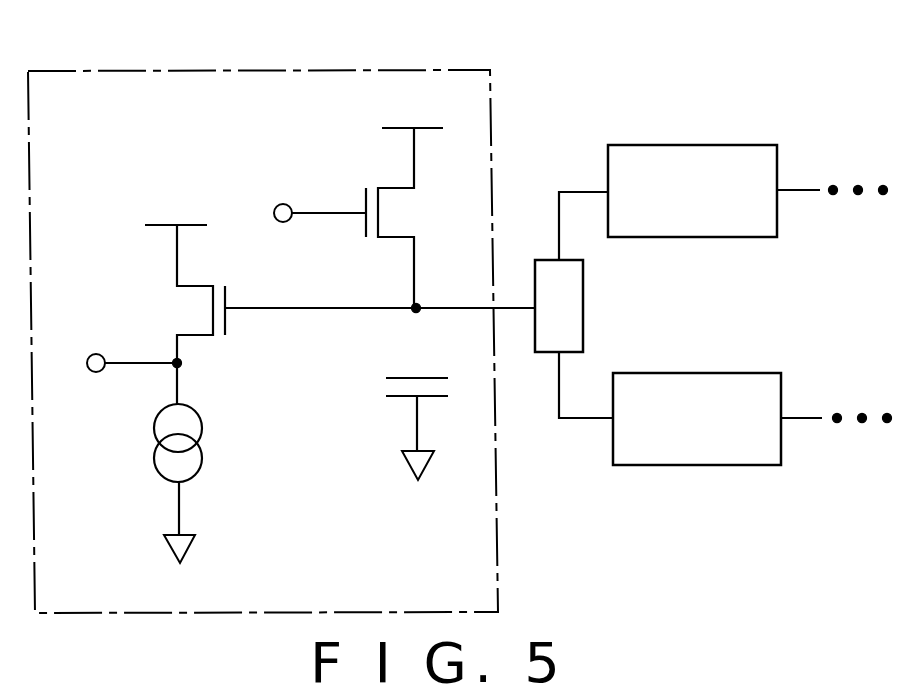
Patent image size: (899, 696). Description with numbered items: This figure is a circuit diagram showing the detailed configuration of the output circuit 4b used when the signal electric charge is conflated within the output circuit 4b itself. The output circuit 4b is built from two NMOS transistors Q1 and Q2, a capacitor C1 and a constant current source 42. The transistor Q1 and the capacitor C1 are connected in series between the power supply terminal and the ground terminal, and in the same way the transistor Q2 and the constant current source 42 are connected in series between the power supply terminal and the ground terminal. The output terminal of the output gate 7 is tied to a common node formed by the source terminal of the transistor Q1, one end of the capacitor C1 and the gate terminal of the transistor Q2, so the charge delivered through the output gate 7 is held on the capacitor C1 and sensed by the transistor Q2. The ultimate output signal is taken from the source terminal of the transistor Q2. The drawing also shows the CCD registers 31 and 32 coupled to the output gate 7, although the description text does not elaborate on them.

The output circuit 4b is at (182, 70).
The output gate 7 is at (580, 302).
The CCD register 31 is at (712, 152).
The CCD register 32 is at (717, 457).
The constant current source 42 is at (150, 430).
The NMOS transistor Q1 is at (410, 215).
The NMOS transistor Q2 is at (187, 310).
The capacitor C1 is at (380, 387).